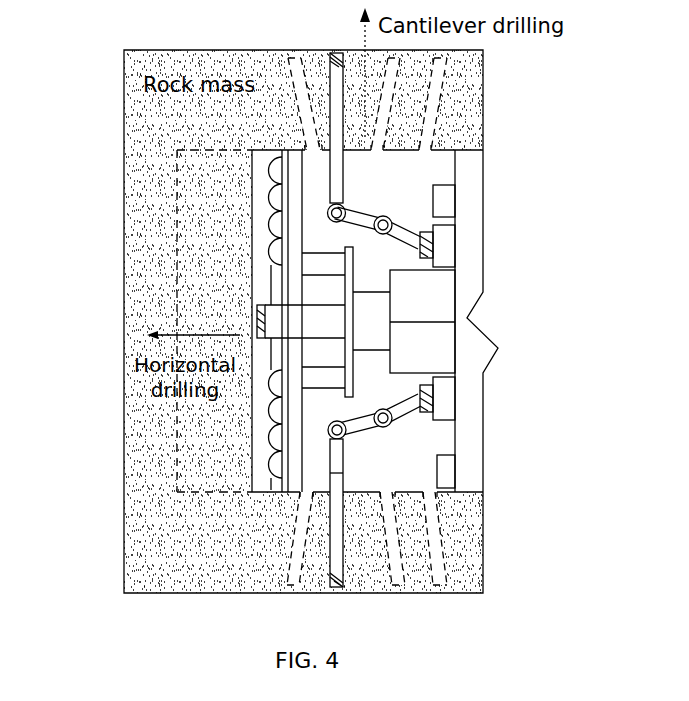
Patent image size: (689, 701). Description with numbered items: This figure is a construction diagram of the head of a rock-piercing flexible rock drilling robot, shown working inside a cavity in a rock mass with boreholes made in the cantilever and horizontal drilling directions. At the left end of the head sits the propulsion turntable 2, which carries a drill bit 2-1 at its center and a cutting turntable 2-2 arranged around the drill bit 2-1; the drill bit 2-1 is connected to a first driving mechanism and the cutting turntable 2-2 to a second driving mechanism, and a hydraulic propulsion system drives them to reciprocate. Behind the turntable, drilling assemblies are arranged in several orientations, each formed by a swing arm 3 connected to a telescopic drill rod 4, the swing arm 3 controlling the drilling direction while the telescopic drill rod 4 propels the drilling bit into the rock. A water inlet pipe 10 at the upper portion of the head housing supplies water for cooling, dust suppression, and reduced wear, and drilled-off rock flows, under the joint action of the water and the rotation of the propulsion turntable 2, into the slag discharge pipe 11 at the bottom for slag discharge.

The propulsion turntable 2 is at (297, 197).
The drill bit 2-1 is at (257, 308).
The cutting turntable 2-2 is at (270, 211).
The swing arm 3 is at (392, 425).
The telescopic drill rod 4 is at (343, 478).
The water inlet pipe 10 is at (437, 197).
The slag discharge pipe 11 is at (442, 468).